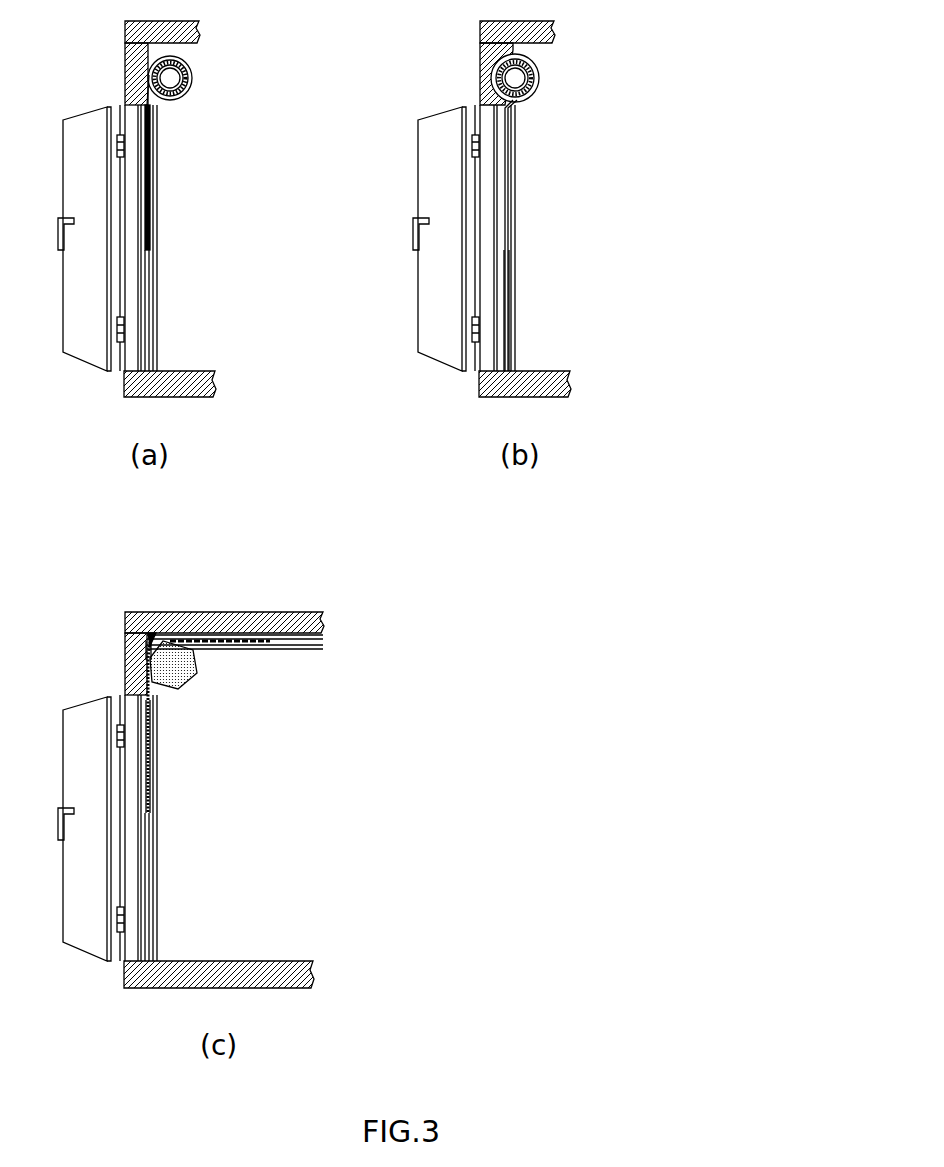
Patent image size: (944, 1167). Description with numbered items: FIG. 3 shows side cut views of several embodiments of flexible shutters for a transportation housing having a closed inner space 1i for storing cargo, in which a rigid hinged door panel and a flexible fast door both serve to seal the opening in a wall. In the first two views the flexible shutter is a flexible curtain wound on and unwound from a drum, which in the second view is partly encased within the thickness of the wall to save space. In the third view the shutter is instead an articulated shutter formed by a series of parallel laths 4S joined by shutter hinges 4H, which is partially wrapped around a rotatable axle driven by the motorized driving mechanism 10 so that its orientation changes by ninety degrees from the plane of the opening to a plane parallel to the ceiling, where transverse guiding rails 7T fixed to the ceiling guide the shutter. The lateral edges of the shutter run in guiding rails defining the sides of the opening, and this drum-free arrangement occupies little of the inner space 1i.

The shutter hinges 4H is at (150, 735).
The laths 4S is at (150, 775).
The transverse guiding rail 7T is at (277, 653).
The motorized driving mechanism 10 is at (197, 668).
The closed inner space 1i is at (272, 808).